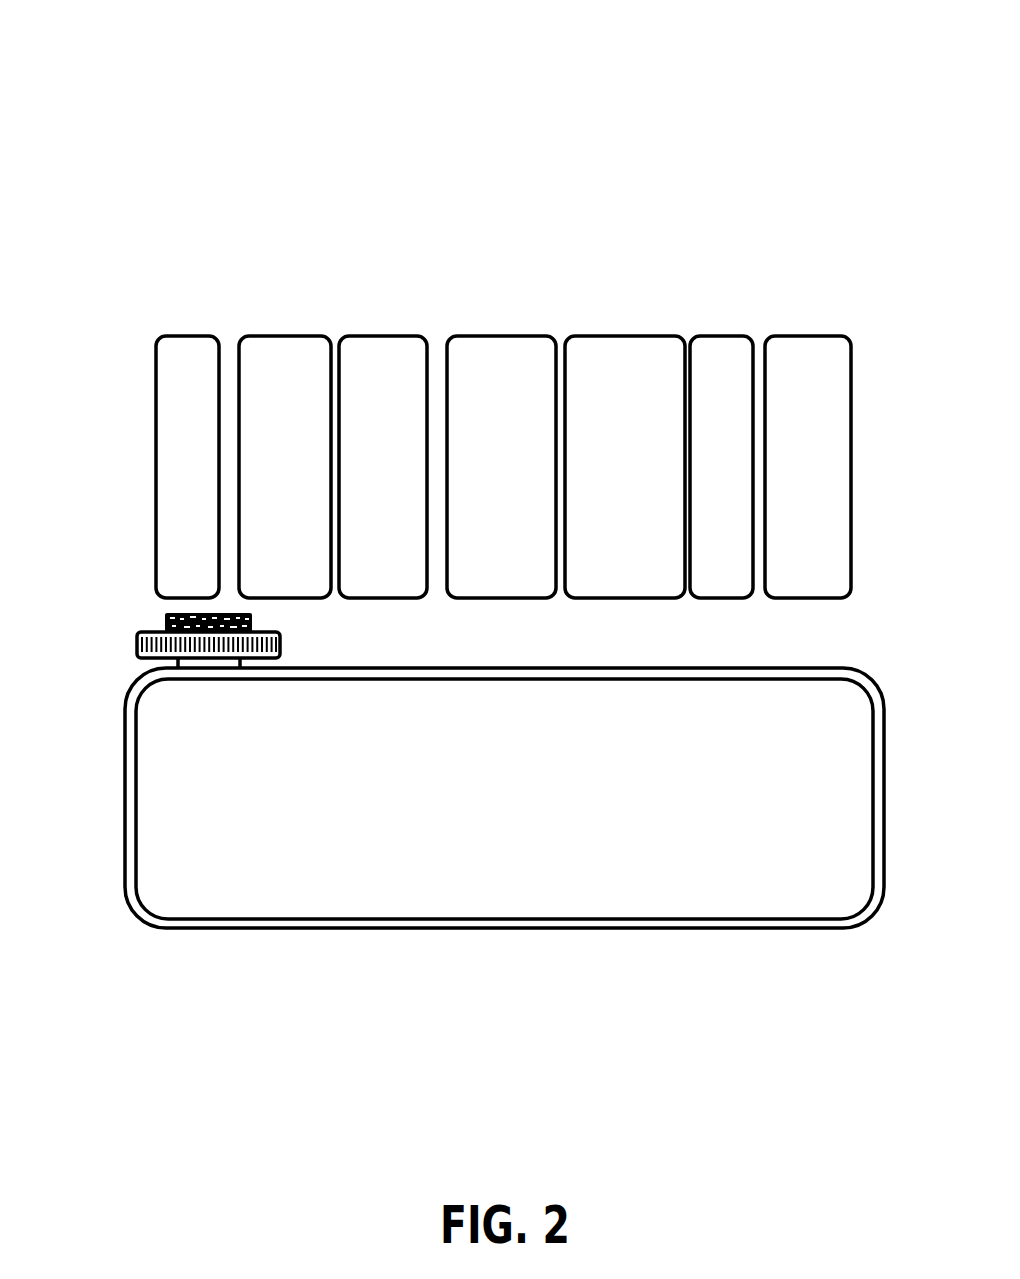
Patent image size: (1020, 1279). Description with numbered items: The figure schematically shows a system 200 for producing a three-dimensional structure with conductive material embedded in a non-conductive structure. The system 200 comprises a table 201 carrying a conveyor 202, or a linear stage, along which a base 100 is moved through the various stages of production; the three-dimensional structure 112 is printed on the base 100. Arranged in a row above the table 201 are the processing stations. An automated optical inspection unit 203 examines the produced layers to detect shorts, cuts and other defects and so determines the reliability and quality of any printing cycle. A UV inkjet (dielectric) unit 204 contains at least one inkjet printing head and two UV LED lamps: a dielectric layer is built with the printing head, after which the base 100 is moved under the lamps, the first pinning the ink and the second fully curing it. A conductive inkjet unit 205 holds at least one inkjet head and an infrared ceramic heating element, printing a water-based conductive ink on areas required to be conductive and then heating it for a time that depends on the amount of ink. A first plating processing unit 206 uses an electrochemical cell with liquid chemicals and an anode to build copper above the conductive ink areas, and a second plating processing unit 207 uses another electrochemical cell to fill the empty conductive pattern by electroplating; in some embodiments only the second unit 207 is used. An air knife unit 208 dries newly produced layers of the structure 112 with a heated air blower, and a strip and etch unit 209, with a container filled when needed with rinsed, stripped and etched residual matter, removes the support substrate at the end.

The base 100 is at (157, 646).
The 3D structure 112 is at (165, 620).
The system 200 is at (830, 68).
The table 201 is at (688, 963).
The conveyor 202 is at (525, 918).
The automated optical inspection unit 203 is at (188, 333).
The UV inkjet (dielectric) unit 204 is at (292, 333).
The conductive inkjet unit 205 is at (387, 333).
The first plating processing unit 206 is at (503, 333).
The second plating processing unit 207 is at (612, 333).
The air knife unit 208 is at (722, 333).
The strip & etch unit 209 is at (817, 333).